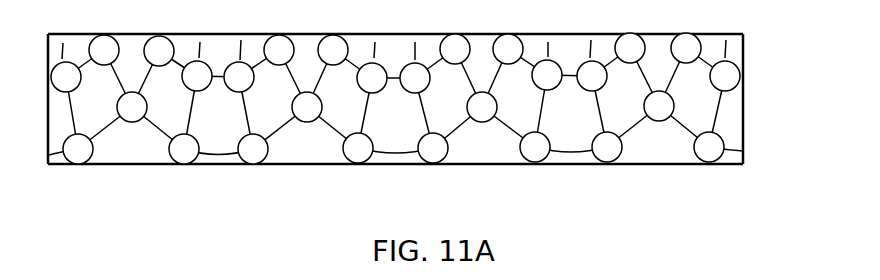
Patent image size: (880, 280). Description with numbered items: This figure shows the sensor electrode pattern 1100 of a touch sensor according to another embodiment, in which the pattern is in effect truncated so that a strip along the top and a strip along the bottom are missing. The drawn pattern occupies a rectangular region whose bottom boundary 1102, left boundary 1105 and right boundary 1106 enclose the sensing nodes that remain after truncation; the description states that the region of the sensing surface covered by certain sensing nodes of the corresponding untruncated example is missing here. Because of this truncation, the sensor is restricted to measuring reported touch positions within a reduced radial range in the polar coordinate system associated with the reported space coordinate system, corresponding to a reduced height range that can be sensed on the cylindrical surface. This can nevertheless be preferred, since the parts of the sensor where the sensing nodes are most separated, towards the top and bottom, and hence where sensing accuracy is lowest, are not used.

The network graph board 1100 is at (597, 34).
The bottom boundary edge 1102 is at (582, 165).
The left boundary edge 1105 is at (48, 144).
The right boundary edge 1106 is at (744, 146).